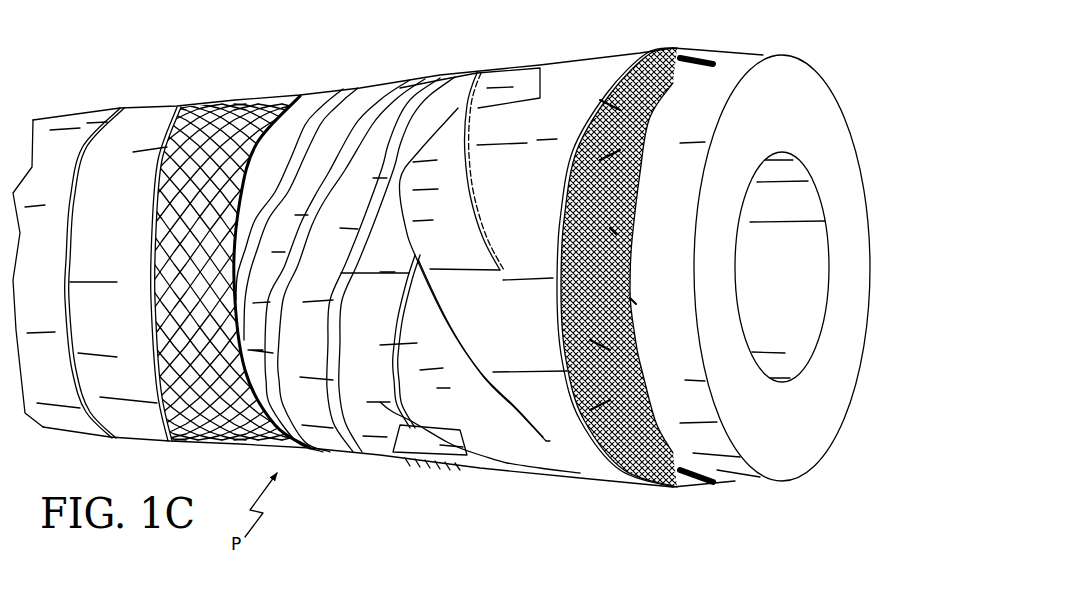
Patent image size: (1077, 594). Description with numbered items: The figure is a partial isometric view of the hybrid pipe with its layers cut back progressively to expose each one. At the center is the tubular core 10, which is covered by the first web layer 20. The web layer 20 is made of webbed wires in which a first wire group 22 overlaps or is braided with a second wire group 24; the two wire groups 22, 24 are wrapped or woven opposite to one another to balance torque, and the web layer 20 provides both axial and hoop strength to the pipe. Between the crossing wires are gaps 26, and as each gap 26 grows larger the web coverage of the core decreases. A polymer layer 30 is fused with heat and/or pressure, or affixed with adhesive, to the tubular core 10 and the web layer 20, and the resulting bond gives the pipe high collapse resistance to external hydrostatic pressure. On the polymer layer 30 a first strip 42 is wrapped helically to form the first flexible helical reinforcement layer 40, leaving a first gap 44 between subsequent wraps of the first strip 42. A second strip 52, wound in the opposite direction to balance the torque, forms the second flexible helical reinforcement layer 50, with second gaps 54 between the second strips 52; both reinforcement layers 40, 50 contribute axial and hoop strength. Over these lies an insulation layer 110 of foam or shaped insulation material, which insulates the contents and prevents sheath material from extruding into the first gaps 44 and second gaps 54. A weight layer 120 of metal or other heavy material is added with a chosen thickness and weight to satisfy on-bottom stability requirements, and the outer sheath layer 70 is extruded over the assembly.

The tubular core 10 is at (740, 57).
The first web layer 20 is at (700, 55).
The first wire group 22 is at (668, 97).
The second wire group 24 is at (650, 125).
The gap 26 is at (632, 300).
The polymer layer 30 is at (590, 57).
The first flexible helical reinforcement layer 40 is at (518, 63).
The first strip 42 is at (503, 418).
The first gap 44 is at (447, 405).
The second flexible helical reinforcement layer 50 is at (385, 83).
The second strip 52 is at (380, 420).
The second gap 54 is at (333, 388).
The sheath layer 70 is at (90, 112).
The insulation layer 110 is at (270, 100).
The weight layer 120 is at (167, 110).